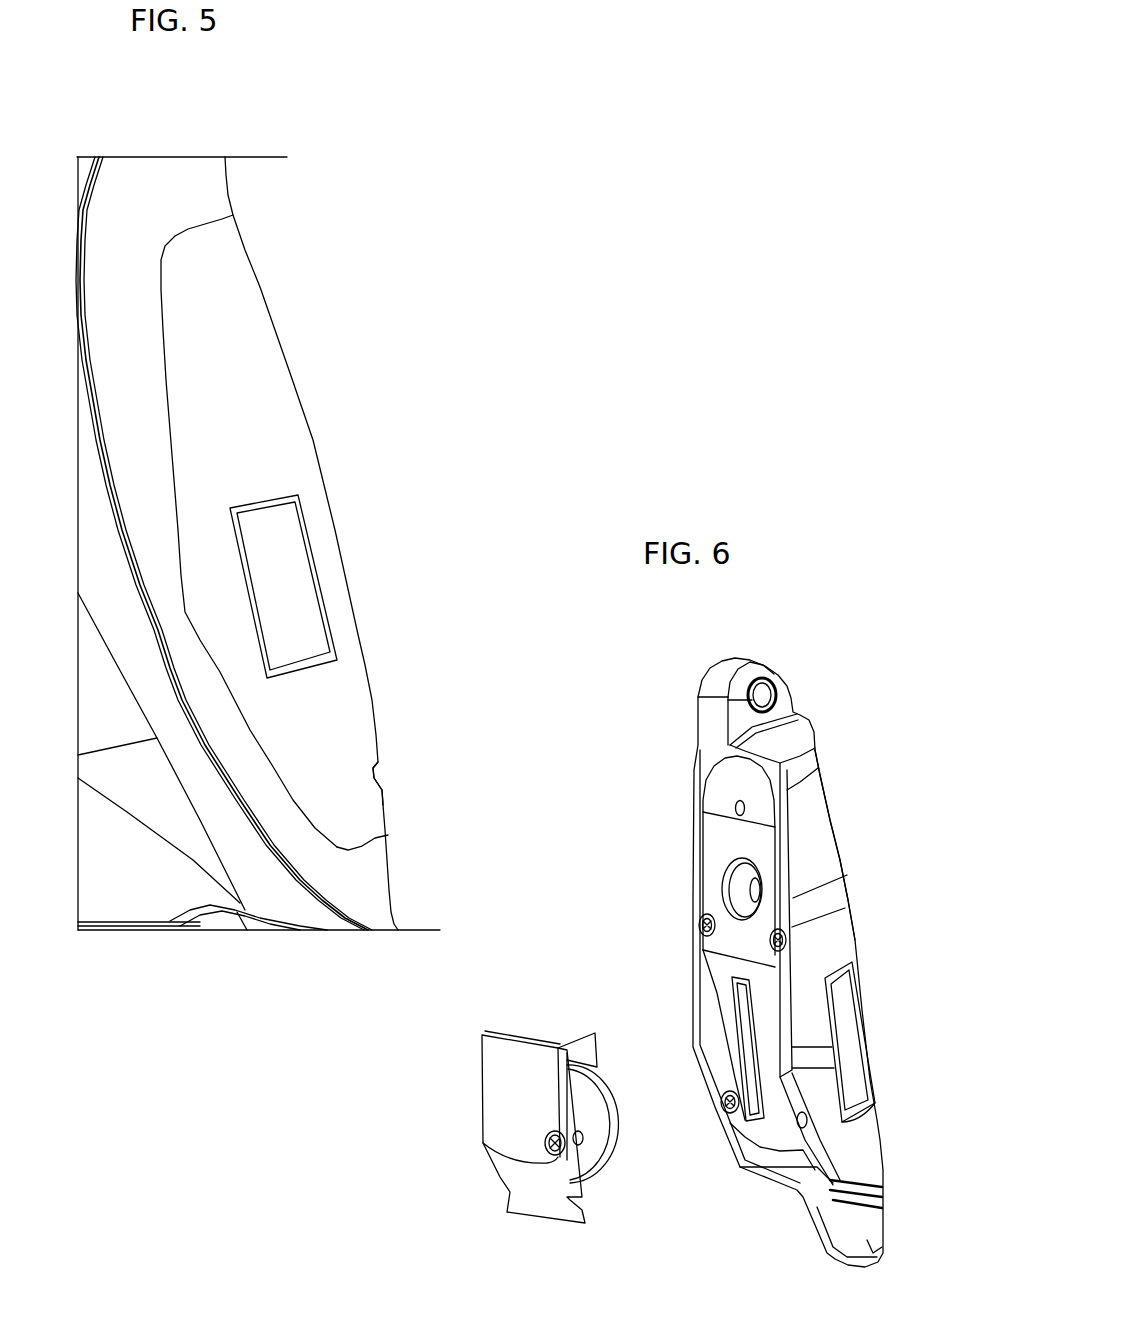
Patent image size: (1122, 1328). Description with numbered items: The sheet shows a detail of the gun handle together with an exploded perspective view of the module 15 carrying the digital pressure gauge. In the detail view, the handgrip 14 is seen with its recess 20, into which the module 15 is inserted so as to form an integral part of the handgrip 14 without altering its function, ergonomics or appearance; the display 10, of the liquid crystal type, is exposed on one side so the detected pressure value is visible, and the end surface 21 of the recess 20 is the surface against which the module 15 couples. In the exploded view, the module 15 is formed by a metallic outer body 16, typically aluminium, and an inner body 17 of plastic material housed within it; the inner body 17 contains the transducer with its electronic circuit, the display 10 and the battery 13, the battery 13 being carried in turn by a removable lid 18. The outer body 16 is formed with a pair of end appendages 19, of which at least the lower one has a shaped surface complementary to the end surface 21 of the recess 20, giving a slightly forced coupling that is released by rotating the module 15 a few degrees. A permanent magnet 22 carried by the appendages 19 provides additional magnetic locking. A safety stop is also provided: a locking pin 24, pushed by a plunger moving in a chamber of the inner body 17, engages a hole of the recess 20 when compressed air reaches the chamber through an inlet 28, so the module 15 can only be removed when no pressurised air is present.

In FIG. 5, the display 10 is at (326, 586).
In FIG. 6, the display 10 is at (880, 1042).
In FIG. 6, the battery 13 is at (615, 1136).
In FIG. 5, the handgrip 14 is at (112, 290).
In FIG. 5, the module 15 is at (309, 388).
In FIG. 6, the module 15 is at (867, 762).
In FIG. 6, the outer body 16 is at (857, 925).
In FIG. 6, the inner body 17 is at (716, 994).
In FIG. 6, the removable lid 18 is at (507, 1127).
In FIG. 5, the end appendages 19 is at (408, 876).
In FIG. 6, the end appendages 19 is at (784, 980).
In FIG. 5, the recess 20 is at (230, 531).
In FIG. 5, the end surface 21 is at (424, 798).
In FIG. 6, the permanent magnet 22 is at (796, 661).
In FIG. 6, the locking pin 24 is at (679, 792).
In FIG. 6, the inlet 28 is at (698, 889).